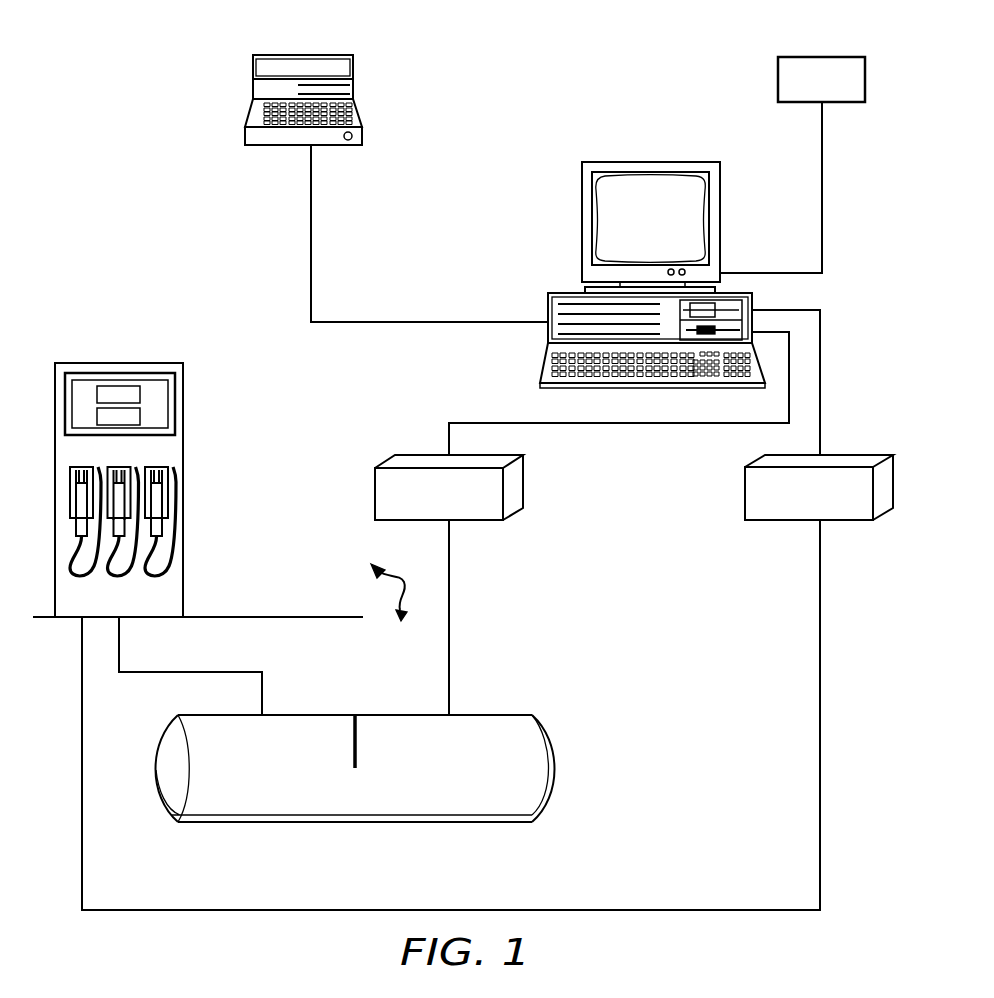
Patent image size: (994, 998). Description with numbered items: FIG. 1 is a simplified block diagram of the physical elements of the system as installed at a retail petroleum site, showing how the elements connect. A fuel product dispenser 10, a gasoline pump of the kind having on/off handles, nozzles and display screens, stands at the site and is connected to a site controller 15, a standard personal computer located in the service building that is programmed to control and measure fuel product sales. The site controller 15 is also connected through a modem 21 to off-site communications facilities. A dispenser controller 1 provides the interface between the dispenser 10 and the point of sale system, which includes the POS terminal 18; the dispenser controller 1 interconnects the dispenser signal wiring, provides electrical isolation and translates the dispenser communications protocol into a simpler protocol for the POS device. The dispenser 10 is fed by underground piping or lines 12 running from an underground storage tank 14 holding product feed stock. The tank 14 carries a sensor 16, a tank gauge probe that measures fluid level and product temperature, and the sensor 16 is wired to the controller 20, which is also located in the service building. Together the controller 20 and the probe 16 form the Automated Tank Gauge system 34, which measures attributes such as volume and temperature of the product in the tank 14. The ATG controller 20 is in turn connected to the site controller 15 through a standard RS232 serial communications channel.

The dispenser controller 1 is at (849, 462).
The fuel product dispenser 10 is at (184, 402).
The underground piping or lines 12 is at (140, 673).
The underground storage tank 14 is at (212, 823).
The site controller 15 is at (720, 215).
The sensor 16 is at (358, 744).
The POS terminal 18 is at (252, 108).
The controller 20 is at (422, 462).
The modem 21 is at (778, 78).
The Automated Tank Gauge system 34 is at (406, 592).